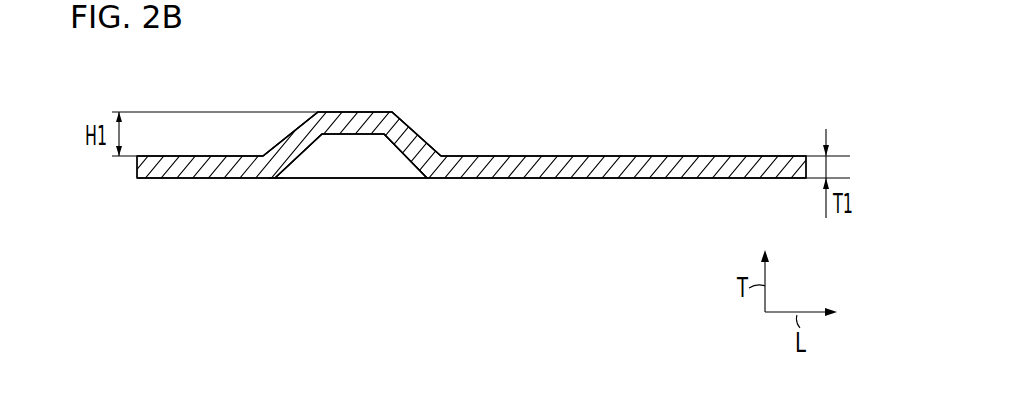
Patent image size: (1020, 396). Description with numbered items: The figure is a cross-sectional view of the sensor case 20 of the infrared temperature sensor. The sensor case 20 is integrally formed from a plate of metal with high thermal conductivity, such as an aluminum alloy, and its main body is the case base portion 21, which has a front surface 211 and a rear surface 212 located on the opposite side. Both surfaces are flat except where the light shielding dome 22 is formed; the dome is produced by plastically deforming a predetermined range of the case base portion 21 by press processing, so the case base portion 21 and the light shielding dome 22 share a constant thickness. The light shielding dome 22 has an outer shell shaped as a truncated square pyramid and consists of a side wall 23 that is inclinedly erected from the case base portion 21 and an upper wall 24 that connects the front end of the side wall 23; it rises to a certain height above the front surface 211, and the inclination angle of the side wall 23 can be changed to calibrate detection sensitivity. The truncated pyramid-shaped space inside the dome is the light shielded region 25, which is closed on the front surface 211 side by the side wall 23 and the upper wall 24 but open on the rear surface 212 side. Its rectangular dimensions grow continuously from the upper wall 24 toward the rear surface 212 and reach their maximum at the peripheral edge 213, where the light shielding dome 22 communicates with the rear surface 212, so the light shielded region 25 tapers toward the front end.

The sensor case 20 is at (134, 183).
The case base portion 21 is at (735, 179).
The front surface 211 is at (617, 155).
The rear surface 212 is at (582, 179).
The peripheral edge 213 is at (276, 179).
The light shielding dome 22 is at (433, 65).
The side wall 23 is at (405, 122).
The upper wall 24 is at (353, 112).
The light shielded region 25 is at (363, 176).